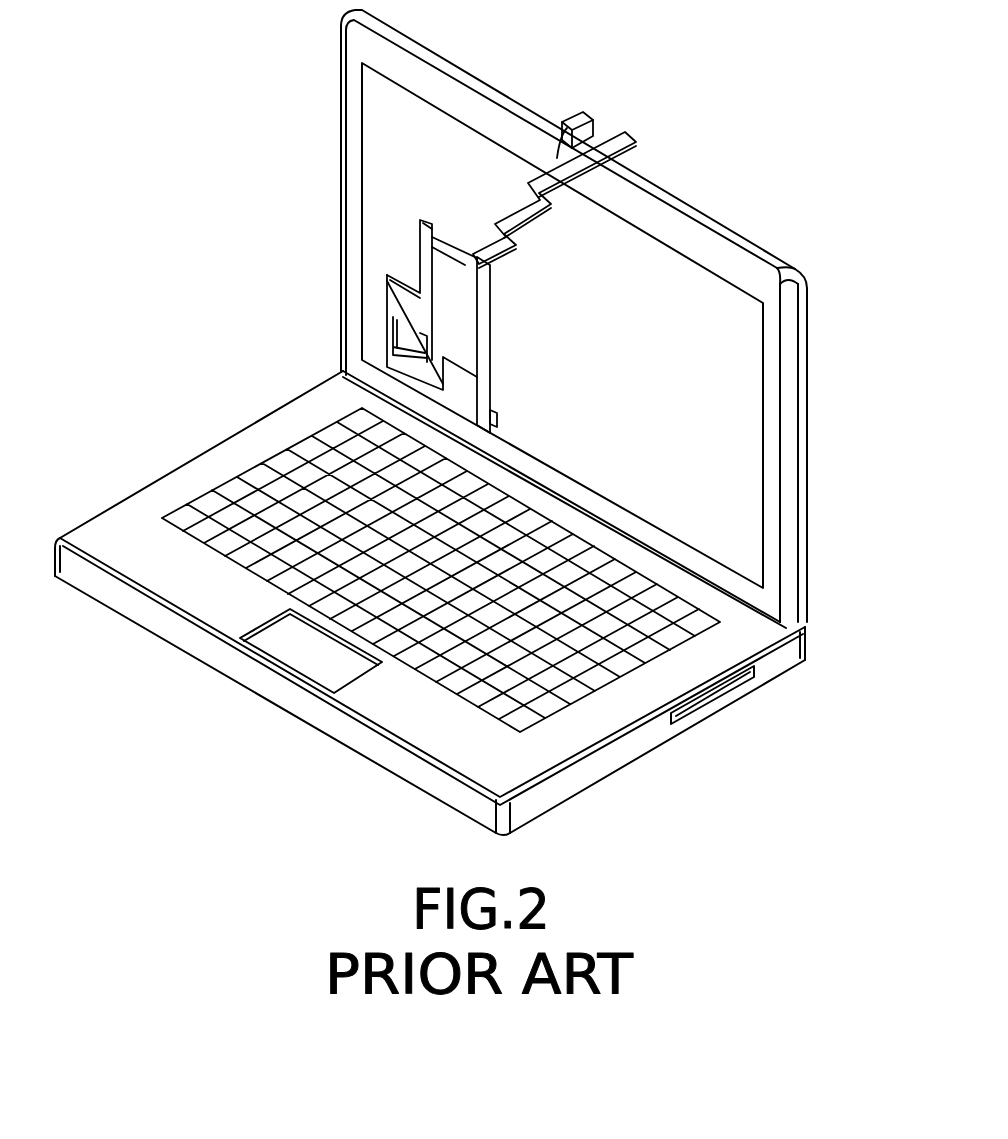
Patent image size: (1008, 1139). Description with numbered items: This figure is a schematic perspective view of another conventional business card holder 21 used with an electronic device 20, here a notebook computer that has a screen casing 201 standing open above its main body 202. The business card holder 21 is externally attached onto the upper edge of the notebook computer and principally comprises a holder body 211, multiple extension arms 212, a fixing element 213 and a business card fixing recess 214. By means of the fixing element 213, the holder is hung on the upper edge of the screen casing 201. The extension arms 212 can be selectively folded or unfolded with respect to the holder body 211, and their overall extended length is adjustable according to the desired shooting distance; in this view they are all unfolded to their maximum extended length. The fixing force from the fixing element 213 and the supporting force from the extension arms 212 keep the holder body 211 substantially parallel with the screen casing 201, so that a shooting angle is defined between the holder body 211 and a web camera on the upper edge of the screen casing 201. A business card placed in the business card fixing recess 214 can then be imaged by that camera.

The electronic device 20 is at (474, 422).
The screen casing 201 is at (790, 447).
The main body (base) 202 is at (602, 713).
The business card holder 21 is at (472, 258).
The holder body 211 is at (458, 382).
The extension arms 212 is at (528, 209).
The fixing element 213 is at (577, 134).
The business card fixing recess 214 is at (495, 413).